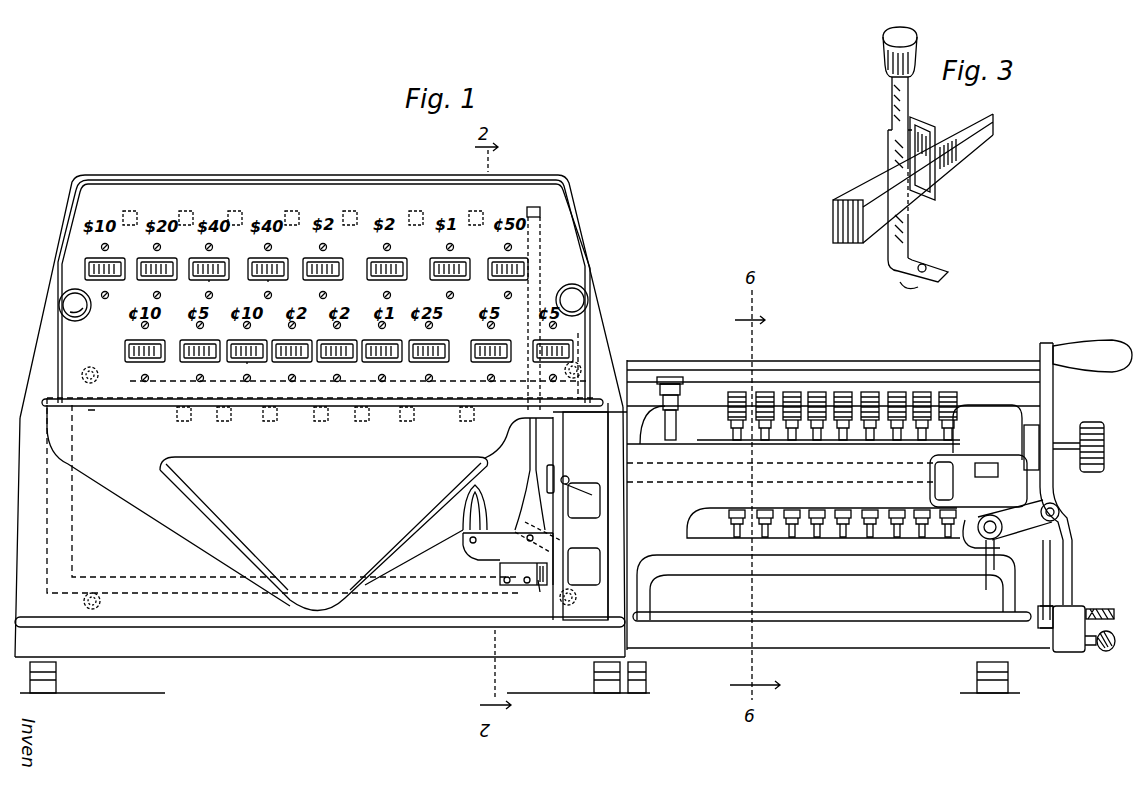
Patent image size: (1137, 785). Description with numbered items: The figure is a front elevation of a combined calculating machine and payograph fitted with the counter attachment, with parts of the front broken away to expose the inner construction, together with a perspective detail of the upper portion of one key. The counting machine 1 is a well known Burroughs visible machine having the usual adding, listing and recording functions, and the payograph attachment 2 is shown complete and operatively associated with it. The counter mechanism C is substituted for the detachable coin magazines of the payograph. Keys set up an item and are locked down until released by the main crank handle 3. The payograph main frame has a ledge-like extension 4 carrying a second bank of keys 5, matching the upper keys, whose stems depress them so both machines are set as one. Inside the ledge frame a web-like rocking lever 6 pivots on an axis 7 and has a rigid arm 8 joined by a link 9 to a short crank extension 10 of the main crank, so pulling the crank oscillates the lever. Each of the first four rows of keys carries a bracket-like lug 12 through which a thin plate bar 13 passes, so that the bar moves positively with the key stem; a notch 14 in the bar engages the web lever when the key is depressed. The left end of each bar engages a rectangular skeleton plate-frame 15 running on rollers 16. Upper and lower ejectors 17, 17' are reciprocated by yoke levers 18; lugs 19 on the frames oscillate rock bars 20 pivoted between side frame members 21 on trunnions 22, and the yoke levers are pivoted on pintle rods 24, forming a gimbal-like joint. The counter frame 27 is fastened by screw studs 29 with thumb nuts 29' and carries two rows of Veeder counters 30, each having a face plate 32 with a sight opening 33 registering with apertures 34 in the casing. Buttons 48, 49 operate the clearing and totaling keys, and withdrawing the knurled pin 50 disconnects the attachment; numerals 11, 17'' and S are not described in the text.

In FIG. 1, the counter mechanism C is at (74, 183).
In FIG. 1, the counting machine 1 is at (838, 526).
In FIG. 1, the payograph attachment 2 is at (609, 369).
In FIG. 1, the main crank handle 3 is at (1070, 600).
In FIG. 1, the ledge-like extension 4 is at (842, 508).
In FIG. 1, the second bank of keys 5 is at (862, 392).
In FIG. 1, the web-like rocking lever 6 is at (983, 481).
In FIG. 1, the axis 7 is at (988, 542).
In FIG. 1, the right-angled rigid extension or arm 8 is at (1050, 501).
In FIG. 1, the link 9 is at (1046, 562).
In FIG. 1, the short crank extension 10 is at (1061, 615).
In FIG. 1, the bracket plate 11 is at (948, 495).
In FIG. 3, the bracket plate 11 is at (888, 140).
In FIG. 3, the bracket-like lug 12 is at (938, 196).
In FIG. 1, the thin plate bar 13 is at (588, 480).
In FIG. 3, the thin plate bar 13 is at (993, 117).
In FIG. 1, the notch 14 is at (987, 466).
In FIG. 1, the rectangular skeleton plate-frame 15 is at (522, 660).
In FIG. 1, the rollers 16 is at (84, 372).
In FIG. 1, the upper ejector 17 is at (369, 292).
In FIG. 1, the lower ejector 17' is at (252, 424).
In FIG. 1, the slide openings 17'' is at (414, 424).
In FIG. 1, the yoke lever 18 is at (530, 435).
In FIG. 1, the lugs 19 is at (500, 568).
In FIG. 1, the rock bars 20 is at (543, 567).
In FIG. 1, the side frame members 21 is at (483, 560).
In FIG. 1, the trunnions 22 is at (534, 538).
In FIG. 1, the pintle rods 24 is at (503, 518).
In FIG. 1, the frame 27 is at (228, 212).
In FIG. 1, the screw studs 29 is at (47, 305).
In FIG. 1, the thumb nuts 29' is at (597, 300).
In FIG. 1, the Veeder counters 30 is at (250, 260).
In FIG. 1, the face plate 32 is at (284, 363).
In FIG. 1, the sight opening 33 is at (212, 281).
In FIG. 1, the registering apertures 34 is at (273, 281).
In FIG. 1, the clearing button 48 is at (672, 378).
In FIG. 1, the totaling button 49 is at (684, 395).
In FIG. 1, the knurled pin 50 is at (1083, 607).
In FIG. 1, the coin hopper S is at (324, 534).